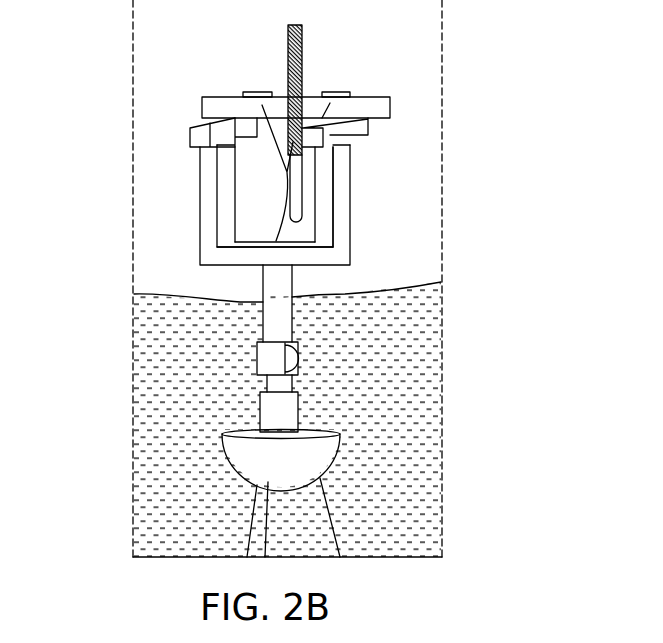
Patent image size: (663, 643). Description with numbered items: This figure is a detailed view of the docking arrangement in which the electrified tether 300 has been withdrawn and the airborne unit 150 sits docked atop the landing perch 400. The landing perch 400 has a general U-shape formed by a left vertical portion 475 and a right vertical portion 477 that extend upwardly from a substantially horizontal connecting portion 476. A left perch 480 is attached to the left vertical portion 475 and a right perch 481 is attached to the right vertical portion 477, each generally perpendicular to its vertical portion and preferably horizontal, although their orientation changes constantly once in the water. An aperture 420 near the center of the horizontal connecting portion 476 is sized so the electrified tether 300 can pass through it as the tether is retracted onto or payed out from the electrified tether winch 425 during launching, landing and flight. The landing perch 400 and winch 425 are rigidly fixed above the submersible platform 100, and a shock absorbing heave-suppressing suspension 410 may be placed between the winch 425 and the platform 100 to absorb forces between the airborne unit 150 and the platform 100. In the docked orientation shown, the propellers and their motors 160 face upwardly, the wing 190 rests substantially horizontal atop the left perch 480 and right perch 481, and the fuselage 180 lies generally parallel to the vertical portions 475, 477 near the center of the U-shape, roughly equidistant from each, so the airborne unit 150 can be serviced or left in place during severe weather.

The landing perch 400 is at (174, 91).
The submersible platform 100 is at (240, 462).
The airborne unit 150 is at (390, 86).
The propellers and their motors 160 is at (252, 92).
The fuselage 180 is at (350, 205).
The wing 190 is at (380, 108).
The electrified tether 300 is at (278, 212).
The heave-suppressing suspension 410 is at (262, 410).
The aperture 420 is at (268, 237).
The electrified tether winch 425 is at (264, 362).
The left vertical portion 475 is at (212, 226).
The horizontal connecting portion 476 is at (292, 252).
The right vertical portion 477 is at (368, 135).
The left perch 480 is at (190, 128).
The right perch 481 is at (342, 188).